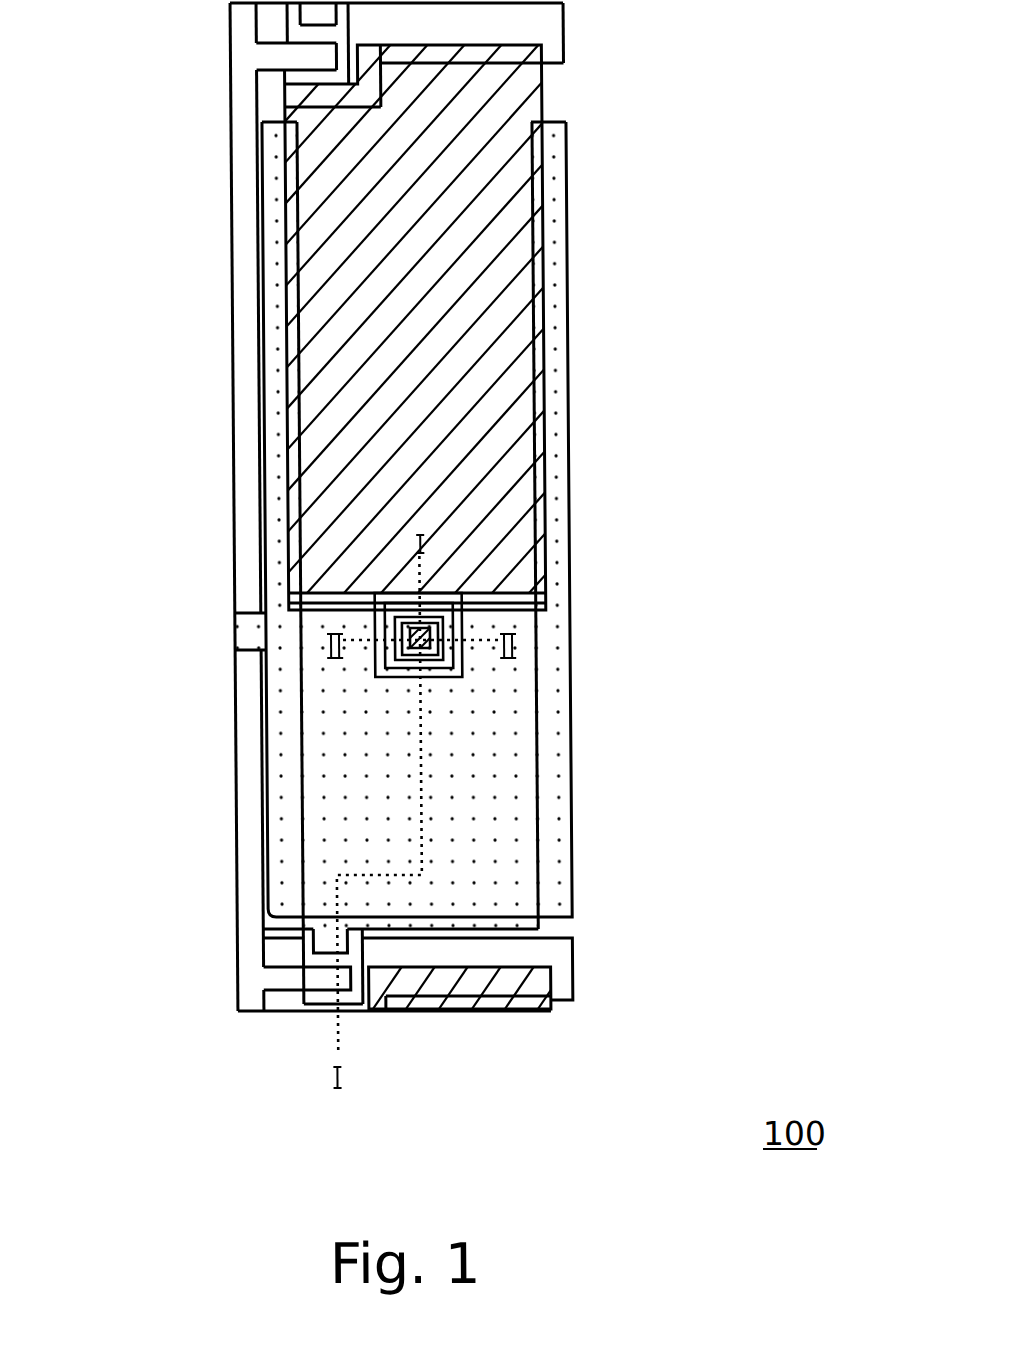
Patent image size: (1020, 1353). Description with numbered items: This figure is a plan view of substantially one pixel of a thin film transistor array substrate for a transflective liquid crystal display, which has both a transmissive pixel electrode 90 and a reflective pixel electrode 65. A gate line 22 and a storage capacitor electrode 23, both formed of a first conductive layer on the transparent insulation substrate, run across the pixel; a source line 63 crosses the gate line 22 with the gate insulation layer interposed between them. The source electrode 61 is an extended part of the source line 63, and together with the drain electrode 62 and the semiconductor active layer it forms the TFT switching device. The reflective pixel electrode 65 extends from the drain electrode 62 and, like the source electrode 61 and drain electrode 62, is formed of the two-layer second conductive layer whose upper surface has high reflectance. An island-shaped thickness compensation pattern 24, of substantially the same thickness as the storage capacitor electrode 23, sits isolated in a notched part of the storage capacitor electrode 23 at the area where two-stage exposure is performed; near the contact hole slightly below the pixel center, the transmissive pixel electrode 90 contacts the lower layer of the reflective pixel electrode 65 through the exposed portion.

The gate line 22 is at (564, 965).
The storage capacitor electrode 23 is at (563, 847).
The thickness compensation pattern 24 is at (440, 665).
The source electrode 61 is at (340, 1000).
The drain electrode 62 is at (301, 927).
The source line 63 is at (229, 770).
The reflective pixel electrode 65 is at (531, 768).
The transmissive pixel electrode 90 is at (530, 82).